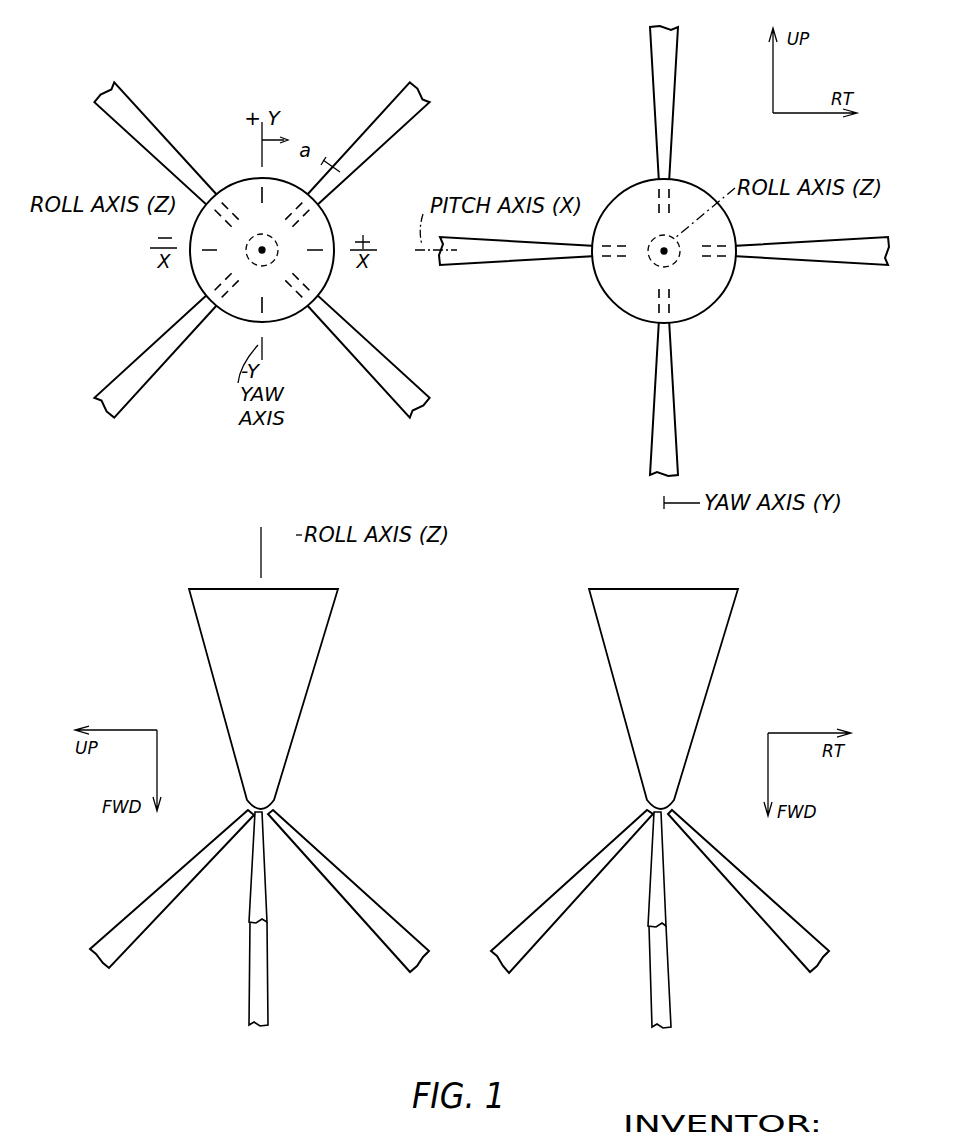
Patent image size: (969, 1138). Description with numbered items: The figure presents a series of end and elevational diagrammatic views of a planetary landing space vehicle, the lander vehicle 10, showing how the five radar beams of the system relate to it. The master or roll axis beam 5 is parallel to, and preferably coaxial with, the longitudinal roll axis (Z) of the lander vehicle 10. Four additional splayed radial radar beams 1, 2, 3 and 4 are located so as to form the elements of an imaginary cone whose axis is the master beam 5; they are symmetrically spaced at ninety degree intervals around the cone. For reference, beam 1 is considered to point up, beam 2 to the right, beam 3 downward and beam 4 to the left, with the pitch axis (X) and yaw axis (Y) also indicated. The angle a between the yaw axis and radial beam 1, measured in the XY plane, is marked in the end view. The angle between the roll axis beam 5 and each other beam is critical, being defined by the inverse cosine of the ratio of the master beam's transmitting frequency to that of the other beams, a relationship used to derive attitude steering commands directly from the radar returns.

The radial radar beam 1 is at (134, 970).
The radial radar beam 2 is at (397, 375).
The radial radar beam 3 is at (122, 378).
The radial radar beam 4 is at (547, 971).
The roll axis beam 5 is at (272, 256).
The lander vehicle 10 is at (199, 267).